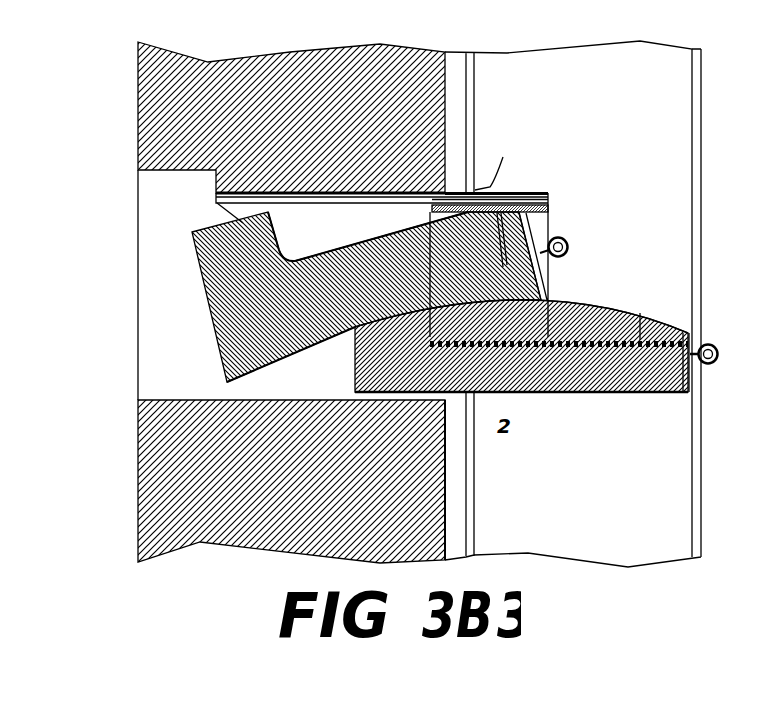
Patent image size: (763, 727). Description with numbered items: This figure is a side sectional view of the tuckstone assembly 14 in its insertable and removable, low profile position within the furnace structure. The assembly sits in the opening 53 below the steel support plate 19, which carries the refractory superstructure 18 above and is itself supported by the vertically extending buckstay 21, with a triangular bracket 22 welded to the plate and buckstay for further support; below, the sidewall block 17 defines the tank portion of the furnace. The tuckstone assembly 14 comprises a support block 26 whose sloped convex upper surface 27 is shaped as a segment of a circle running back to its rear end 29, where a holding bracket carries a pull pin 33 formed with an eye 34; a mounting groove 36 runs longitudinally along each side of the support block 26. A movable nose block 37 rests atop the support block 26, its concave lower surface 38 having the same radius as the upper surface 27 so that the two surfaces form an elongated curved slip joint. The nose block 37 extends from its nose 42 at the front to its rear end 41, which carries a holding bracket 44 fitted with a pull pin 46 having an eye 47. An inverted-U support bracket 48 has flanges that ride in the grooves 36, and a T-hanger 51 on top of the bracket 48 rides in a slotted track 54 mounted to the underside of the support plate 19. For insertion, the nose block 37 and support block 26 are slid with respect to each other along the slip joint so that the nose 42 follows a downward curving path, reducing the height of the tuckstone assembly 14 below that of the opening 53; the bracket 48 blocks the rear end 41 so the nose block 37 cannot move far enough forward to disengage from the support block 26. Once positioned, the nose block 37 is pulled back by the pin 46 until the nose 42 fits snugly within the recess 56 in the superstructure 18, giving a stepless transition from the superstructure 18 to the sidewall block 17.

The tuckstone assembly 14 is at (416, 341).
The sidewall block 17 is at (140, 480).
The superstructure 18 is at (148, 103).
The support plate 19 is at (505, 190).
The buckstay 21 is at (620, 57).
The triangular bracket 22 is at (447, 423).
The support block 26 is at (562, 393).
The convex upper surface 27 is at (633, 313).
The rear end 29 is at (688, 395).
The pull pin 33 is at (710, 365).
The eye 34 is at (708, 343).
The mounting groove 36 is at (645, 312).
The nose block 37 is at (360, 243).
The concave lower surface 38 is at (272, 357).
The rear end of nose block 41 is at (520, 197).
The nose 42 is at (213, 302).
The holding bracket 44 is at (540, 280).
The pull pin 46 is at (570, 247).
The eye 47 is at (540, 253).
The support bracket 48 is at (550, 210).
The T-hanger 51 is at (547, 193).
The opening 53 is at (418, 181).
The slotted track 54 is at (320, 207).
The recess 56 is at (170, 187).